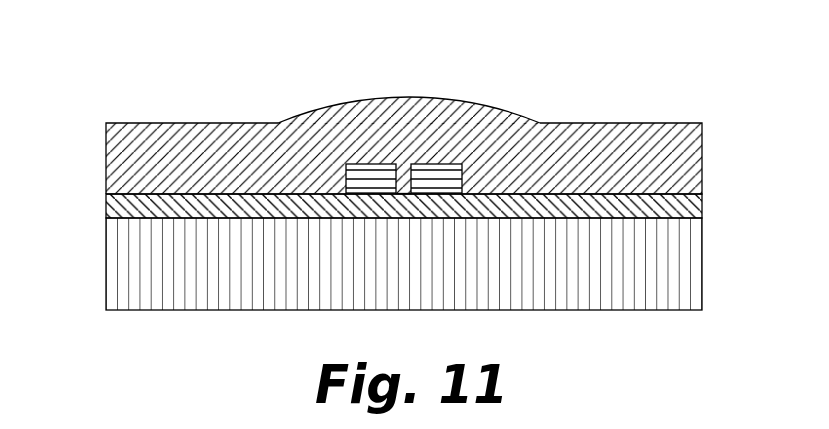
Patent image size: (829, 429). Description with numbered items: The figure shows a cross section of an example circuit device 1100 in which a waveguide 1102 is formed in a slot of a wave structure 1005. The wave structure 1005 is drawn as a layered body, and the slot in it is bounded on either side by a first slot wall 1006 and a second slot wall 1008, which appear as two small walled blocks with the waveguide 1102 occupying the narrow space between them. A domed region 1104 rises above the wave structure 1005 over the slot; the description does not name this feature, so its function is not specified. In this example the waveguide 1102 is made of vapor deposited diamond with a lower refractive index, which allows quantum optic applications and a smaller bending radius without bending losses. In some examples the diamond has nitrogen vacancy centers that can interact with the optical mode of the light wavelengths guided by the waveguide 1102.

The circuit device 1100 is at (172, 98).
The wave structure 1005 is at (332, 183).
The first slot wall 1006 is at (397, 185).
The second slot wall 1008 is at (412, 183).
The waveguide 1102 is at (404, 185).
The encapsulation dome 1104 is at (418, 155).